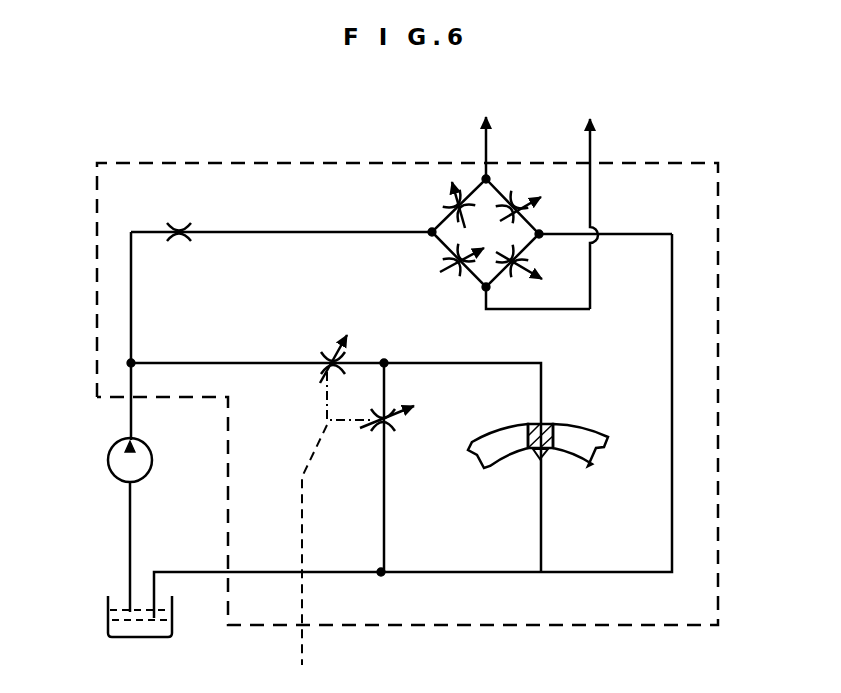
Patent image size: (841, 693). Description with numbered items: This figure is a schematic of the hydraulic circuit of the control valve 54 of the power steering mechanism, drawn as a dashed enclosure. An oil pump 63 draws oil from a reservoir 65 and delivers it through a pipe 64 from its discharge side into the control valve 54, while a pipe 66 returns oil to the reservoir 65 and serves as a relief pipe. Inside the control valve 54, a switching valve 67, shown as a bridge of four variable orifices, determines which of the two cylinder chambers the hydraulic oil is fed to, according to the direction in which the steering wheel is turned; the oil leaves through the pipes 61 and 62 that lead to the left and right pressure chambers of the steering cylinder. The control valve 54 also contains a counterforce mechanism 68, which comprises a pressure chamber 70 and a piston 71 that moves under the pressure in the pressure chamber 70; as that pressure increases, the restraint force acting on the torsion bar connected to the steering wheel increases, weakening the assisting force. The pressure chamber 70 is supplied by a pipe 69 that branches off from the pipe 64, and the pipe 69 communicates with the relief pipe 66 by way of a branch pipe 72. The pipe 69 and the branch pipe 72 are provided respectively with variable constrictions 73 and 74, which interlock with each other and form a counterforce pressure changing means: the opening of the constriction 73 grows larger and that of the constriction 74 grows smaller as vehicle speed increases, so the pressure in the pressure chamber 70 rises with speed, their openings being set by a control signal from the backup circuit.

The control valve 54 is at (722, 245).
The pipe 61 is at (486, 152).
The pipe 62 is at (590, 155).
The oil pump 63 is at (108, 455).
The pipe 64 is at (120, 525).
The reservoir 65 is at (108, 617).
The pipe 66 is at (188, 568).
The switching valve 67 is at (424, 249).
The counterforce mechanism 68 is at (553, 440).
The pipe 69 is at (214, 362).
The pressure chamber 70 is at (528, 425).
The piston 71 is at (542, 455).
The branch pipe 72 is at (386, 530).
The variable constriction 73 is at (326, 350).
The variable constriction 74 is at (405, 433).